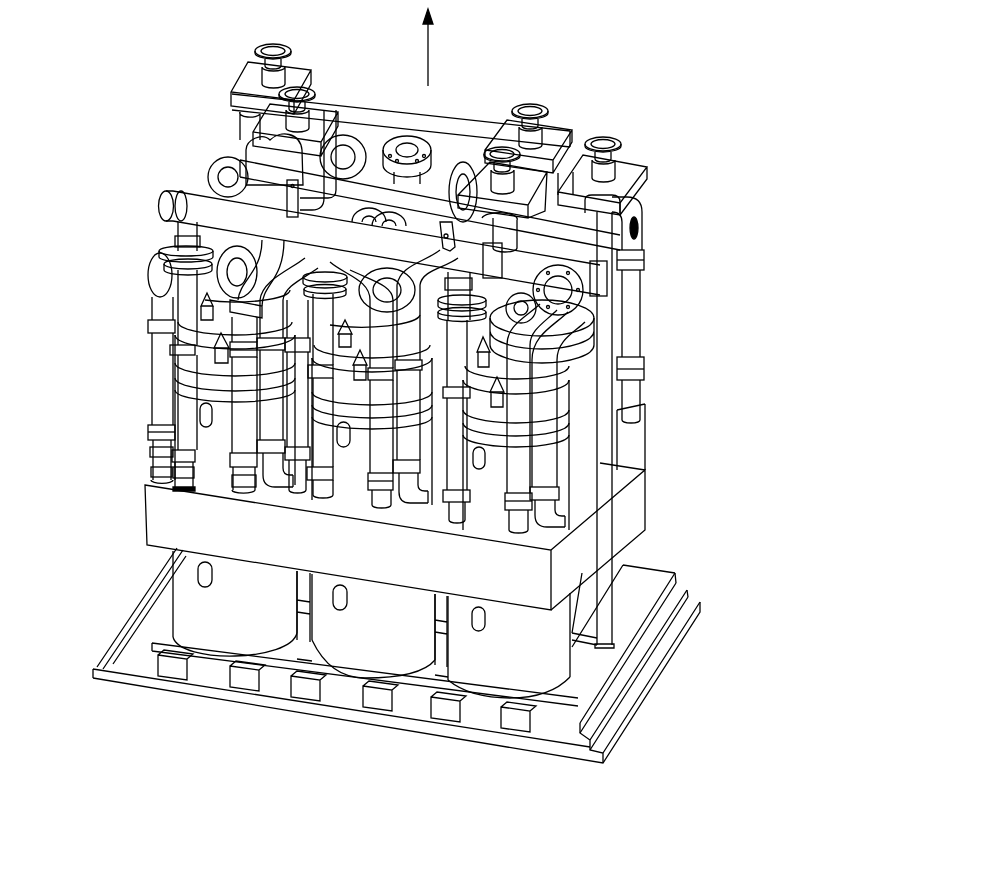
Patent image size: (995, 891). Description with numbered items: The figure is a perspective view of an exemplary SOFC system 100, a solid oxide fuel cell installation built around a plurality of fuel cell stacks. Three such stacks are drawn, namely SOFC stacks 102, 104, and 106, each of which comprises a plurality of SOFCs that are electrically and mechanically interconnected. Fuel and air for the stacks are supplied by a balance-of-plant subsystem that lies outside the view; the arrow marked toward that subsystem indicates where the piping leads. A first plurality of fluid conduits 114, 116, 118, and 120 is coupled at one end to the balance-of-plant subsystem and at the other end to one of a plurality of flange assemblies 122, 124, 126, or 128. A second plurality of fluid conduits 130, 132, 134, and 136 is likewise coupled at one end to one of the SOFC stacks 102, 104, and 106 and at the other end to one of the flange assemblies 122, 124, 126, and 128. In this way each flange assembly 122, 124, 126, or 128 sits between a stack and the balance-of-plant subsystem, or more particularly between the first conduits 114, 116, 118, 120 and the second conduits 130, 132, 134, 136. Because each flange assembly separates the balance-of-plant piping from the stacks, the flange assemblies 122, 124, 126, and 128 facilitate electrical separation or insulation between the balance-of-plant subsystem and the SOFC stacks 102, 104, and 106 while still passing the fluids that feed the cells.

The SOFC system 100 is at (740, 105).
The SOFC stack 102 is at (223, 637).
The SOFC stack 104 is at (357, 660).
The SOFC stack 106 is at (497, 683).
The fluid conduit 114 is at (153, 212).
The fluid conduit 116 is at (180, 185).
The fluid conduit 118 is at (638, 232).
The fluid conduit 120 is at (348, 100).
The flange assembly 122 is at (160, 248).
The flange assembly 124 is at (228, 328).
The flange assembly 126 is at (540, 333).
The flange assembly 128 is at (590, 297).
The fluid conduit 130 is at (183, 423).
The fluid conduit 132 is at (320, 443).
The fluid conduit 134 is at (457, 470).
The fluid conduit 136 is at (577, 410).